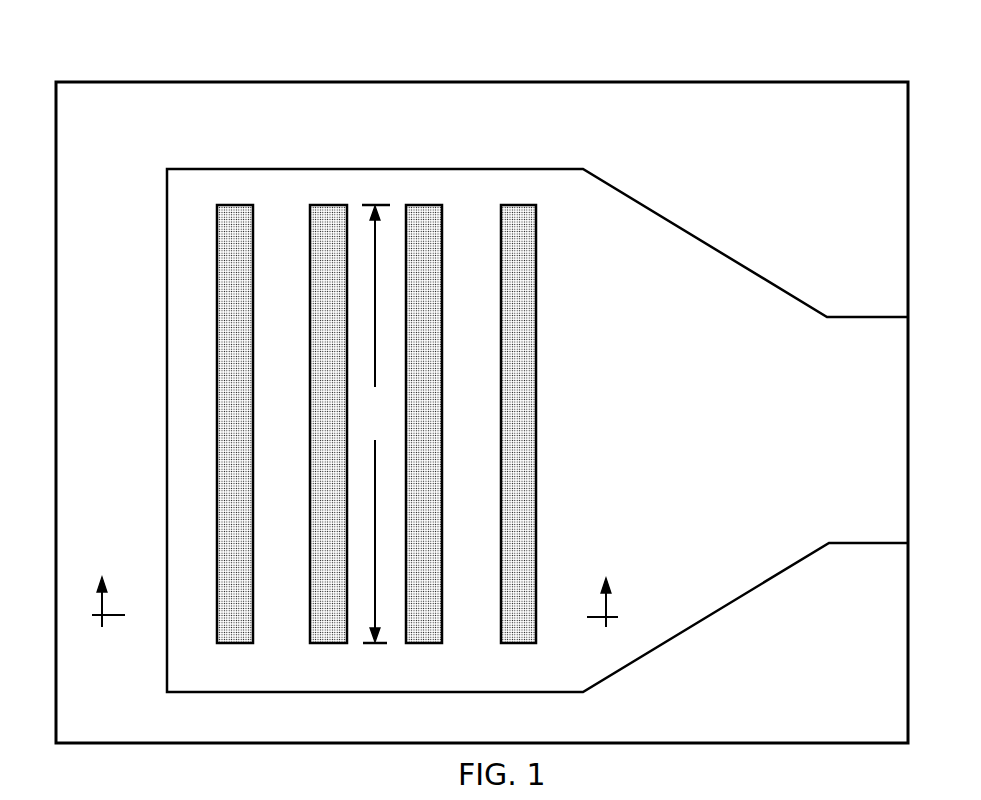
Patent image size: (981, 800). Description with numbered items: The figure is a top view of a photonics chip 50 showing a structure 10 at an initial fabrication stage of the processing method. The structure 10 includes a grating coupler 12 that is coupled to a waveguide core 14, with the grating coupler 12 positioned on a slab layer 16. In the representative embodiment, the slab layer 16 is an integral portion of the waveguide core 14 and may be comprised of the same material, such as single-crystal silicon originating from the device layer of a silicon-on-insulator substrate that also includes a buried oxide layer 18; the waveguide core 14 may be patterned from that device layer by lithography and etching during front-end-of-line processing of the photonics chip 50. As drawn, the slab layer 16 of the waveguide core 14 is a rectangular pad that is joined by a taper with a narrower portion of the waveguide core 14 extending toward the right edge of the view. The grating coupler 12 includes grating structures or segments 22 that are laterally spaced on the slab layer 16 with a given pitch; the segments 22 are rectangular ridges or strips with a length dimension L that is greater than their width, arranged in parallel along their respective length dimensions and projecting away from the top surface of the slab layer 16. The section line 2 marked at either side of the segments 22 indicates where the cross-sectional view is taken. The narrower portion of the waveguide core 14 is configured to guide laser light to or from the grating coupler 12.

The photonics chip 50 is at (118, 53).
The structure 10 is at (158, 142).
The grating coupler 12 is at (384, 424).
The waveguide core 14 is at (858, 512).
The slab layer 16 is at (233, 674).
The buried oxide layer 18 is at (823, 220).
The segments 22 is at (232, 352).
The section line 2 is at (355, 584).
The length dimension L is at (376, 424).